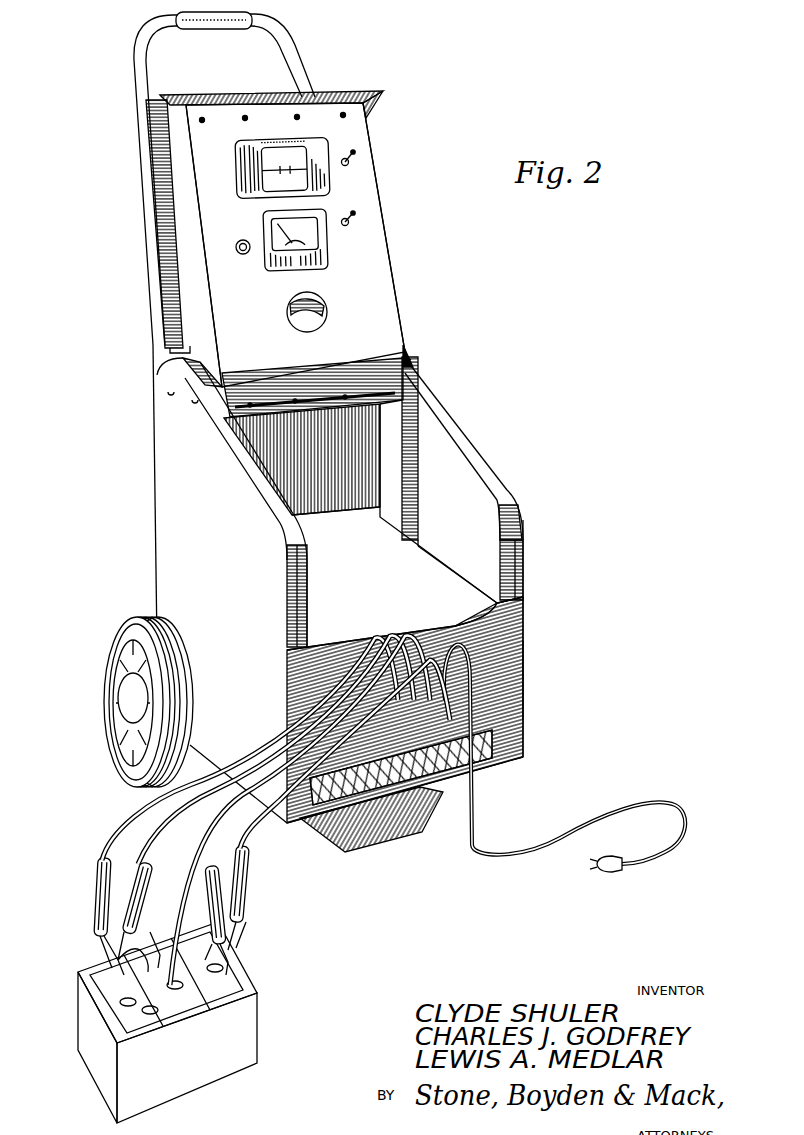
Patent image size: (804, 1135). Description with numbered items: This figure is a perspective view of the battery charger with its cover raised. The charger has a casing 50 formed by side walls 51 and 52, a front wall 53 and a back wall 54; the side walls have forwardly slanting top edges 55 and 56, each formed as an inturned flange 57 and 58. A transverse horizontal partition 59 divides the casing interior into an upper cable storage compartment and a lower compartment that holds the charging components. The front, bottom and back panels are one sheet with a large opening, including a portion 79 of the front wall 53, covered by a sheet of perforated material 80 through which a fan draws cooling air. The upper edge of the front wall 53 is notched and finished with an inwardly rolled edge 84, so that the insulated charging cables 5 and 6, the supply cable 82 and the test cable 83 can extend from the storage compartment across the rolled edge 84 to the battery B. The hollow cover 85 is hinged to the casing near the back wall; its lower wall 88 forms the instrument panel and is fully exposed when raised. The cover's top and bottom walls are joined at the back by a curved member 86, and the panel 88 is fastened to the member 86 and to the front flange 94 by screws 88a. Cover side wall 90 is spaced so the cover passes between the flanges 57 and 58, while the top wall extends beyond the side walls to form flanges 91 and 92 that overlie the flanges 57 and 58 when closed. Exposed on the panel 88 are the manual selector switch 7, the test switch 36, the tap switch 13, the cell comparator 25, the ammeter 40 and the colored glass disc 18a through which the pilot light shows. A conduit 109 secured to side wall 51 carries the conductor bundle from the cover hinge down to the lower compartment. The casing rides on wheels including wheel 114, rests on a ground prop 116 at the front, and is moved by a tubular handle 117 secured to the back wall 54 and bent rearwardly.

The tubular handle 117 is at (135, 105).
The flange 92 is at (157, 143).
The side wall 90 is at (178, 170).
The cell comparator 25 is at (247, 183).
The colored glass disc 18a is at (236, 247).
The ammeter 40 is at (268, 263).
The tap switch 13 is at (288, 318).
The flange 94 is at (340, 93).
The flange 91 is at (383, 108).
The test switch 36 is at (356, 160).
The manual selector switch 7 is at (362, 220).
The hollow cover 85 is at (386, 240).
The lower wall 88 is at (367, 275).
The screws 88a is at (244, 116).
The curved member 86 is at (418, 410).
The conduit 109 is at (393, 437).
The top edge 55 is at (490, 460).
The inturned flange 57 is at (510, 497).
The inwardly rolled edge 84 is at (523, 583).
The side wall 51 is at (458, 534).
The top edge 56 is at (236, 457).
The inturned flange 58 is at (275, 515).
The casing 50 is at (157, 561).
The side wall 52 is at (224, 632).
The back wall 54 is at (330, 472).
The partition 59 is at (382, 592).
The front wall 53 is at (343, 697).
The insulated cable 82 is at (523, 613).
The insulated charging cable 5 is at (523, 648).
The insulated cable 83 is at (523, 678).
The insulated charging cable 6 is at (520, 707).
The front opening portion 79 is at (327, 835).
The ground prop 116 is at (390, 845).
The wheel 114 is at (140, 618).
The perforated sheet 80 is at (290, 830).
The battery B is at (167, 1022).